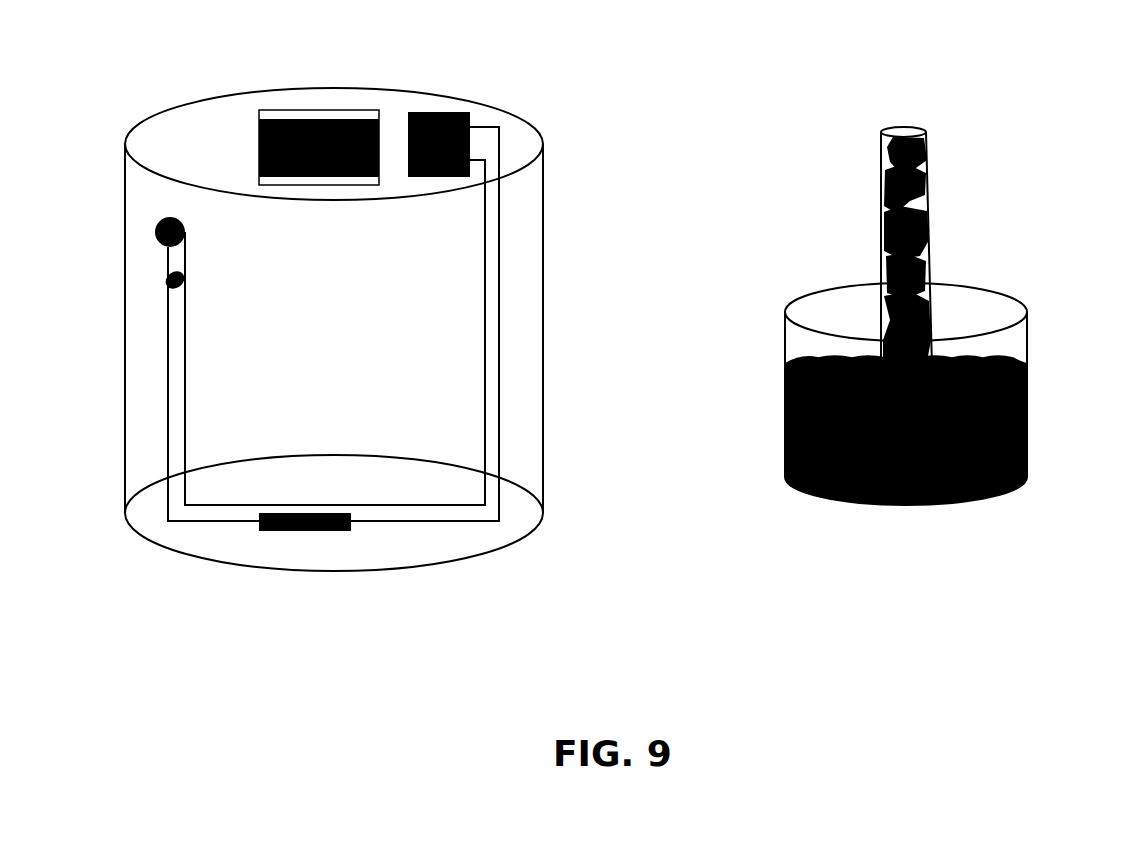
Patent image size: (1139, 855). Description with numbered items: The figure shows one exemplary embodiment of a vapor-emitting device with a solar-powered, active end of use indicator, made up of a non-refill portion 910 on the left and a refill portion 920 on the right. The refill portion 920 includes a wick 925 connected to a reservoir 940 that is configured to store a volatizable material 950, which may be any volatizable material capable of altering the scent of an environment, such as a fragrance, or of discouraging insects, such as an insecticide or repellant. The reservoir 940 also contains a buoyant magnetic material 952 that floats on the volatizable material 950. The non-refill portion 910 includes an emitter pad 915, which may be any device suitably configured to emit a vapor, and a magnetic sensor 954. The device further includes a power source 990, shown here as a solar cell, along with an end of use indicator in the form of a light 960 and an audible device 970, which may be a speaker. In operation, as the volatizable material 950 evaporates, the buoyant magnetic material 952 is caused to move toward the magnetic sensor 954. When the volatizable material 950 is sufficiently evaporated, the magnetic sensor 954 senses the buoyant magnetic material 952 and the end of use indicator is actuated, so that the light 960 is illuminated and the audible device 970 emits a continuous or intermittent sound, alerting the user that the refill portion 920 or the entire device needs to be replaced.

The non-refill portion 910 is at (128, 91).
The emitter pad 915 is at (321, 118).
The power source 990 is at (470, 121).
The audible device 970 is at (157, 229).
The light 960 is at (167, 280).
The magnetic sensor 954 is at (325, 532).
The refill portion 920 is at (925, 296).
The wick 925 is at (888, 178).
The reservoir 940 is at (1028, 324).
The buoyant magnetic material 952 is at (785, 383).
The volatizable material 950 is at (785, 443).